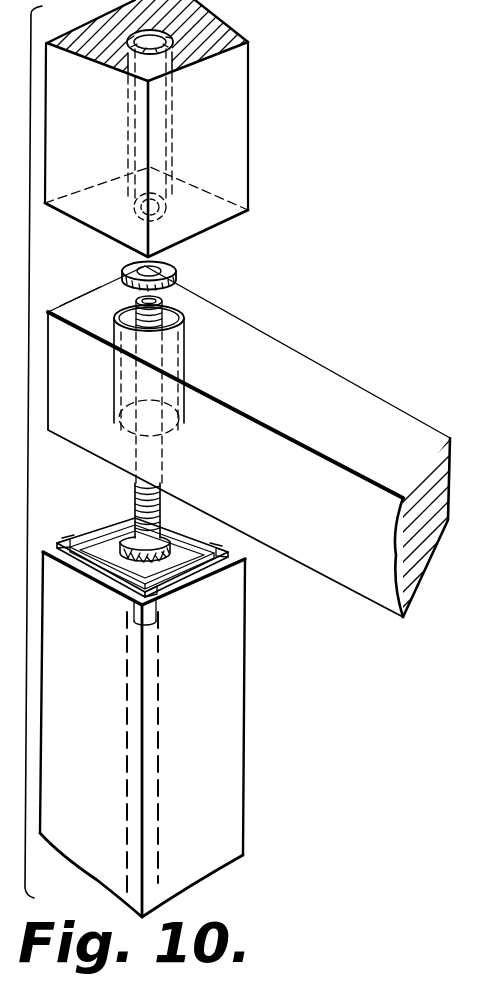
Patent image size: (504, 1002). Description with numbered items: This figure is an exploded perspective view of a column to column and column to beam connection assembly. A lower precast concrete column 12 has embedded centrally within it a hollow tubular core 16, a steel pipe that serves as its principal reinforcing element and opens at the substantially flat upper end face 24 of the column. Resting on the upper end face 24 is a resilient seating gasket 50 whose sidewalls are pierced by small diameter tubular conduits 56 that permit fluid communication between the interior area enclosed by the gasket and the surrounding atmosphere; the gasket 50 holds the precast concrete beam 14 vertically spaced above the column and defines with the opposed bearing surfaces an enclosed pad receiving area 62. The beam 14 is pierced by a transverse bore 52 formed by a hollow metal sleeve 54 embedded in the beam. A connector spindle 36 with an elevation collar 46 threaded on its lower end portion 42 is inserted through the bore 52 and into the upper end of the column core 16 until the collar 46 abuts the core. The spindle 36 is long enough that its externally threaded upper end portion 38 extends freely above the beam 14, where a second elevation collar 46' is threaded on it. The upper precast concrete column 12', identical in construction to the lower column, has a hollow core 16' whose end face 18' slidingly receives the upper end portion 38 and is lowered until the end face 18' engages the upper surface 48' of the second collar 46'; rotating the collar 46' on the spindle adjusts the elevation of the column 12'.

The precast concrete column 12 is at (167, 734).
The second-lift precast concrete column 12' is at (165, 128).
The precast concrete beam 14 is at (328, 373).
The hollow tubular core 16 is at (172, 751).
The hollow core of upper column 16' is at (220, 114).
The core end face 18' is at (179, 208).
The upper end face of column 24 is at (247, 558).
The connector spindle 36 is at (134, 493).
The externally threaded upper end portion of spindle 38 is at (98, 297).
The lower end portion of spindle 42 is at (133, 621).
The elevation collar 46 is at (191, 527).
The second elevation collar 46' is at (184, 263).
The upper surface of second elevation collar 48' is at (124, 270).
The resilient seating gasket 50 is at (87, 559).
The bore 52 is at (173, 318).
The hollow metal sleeve 54 is at (185, 315).
The tubular conduit 56 is at (64, 548).
The pad receiving area 62 is at (125, 568).